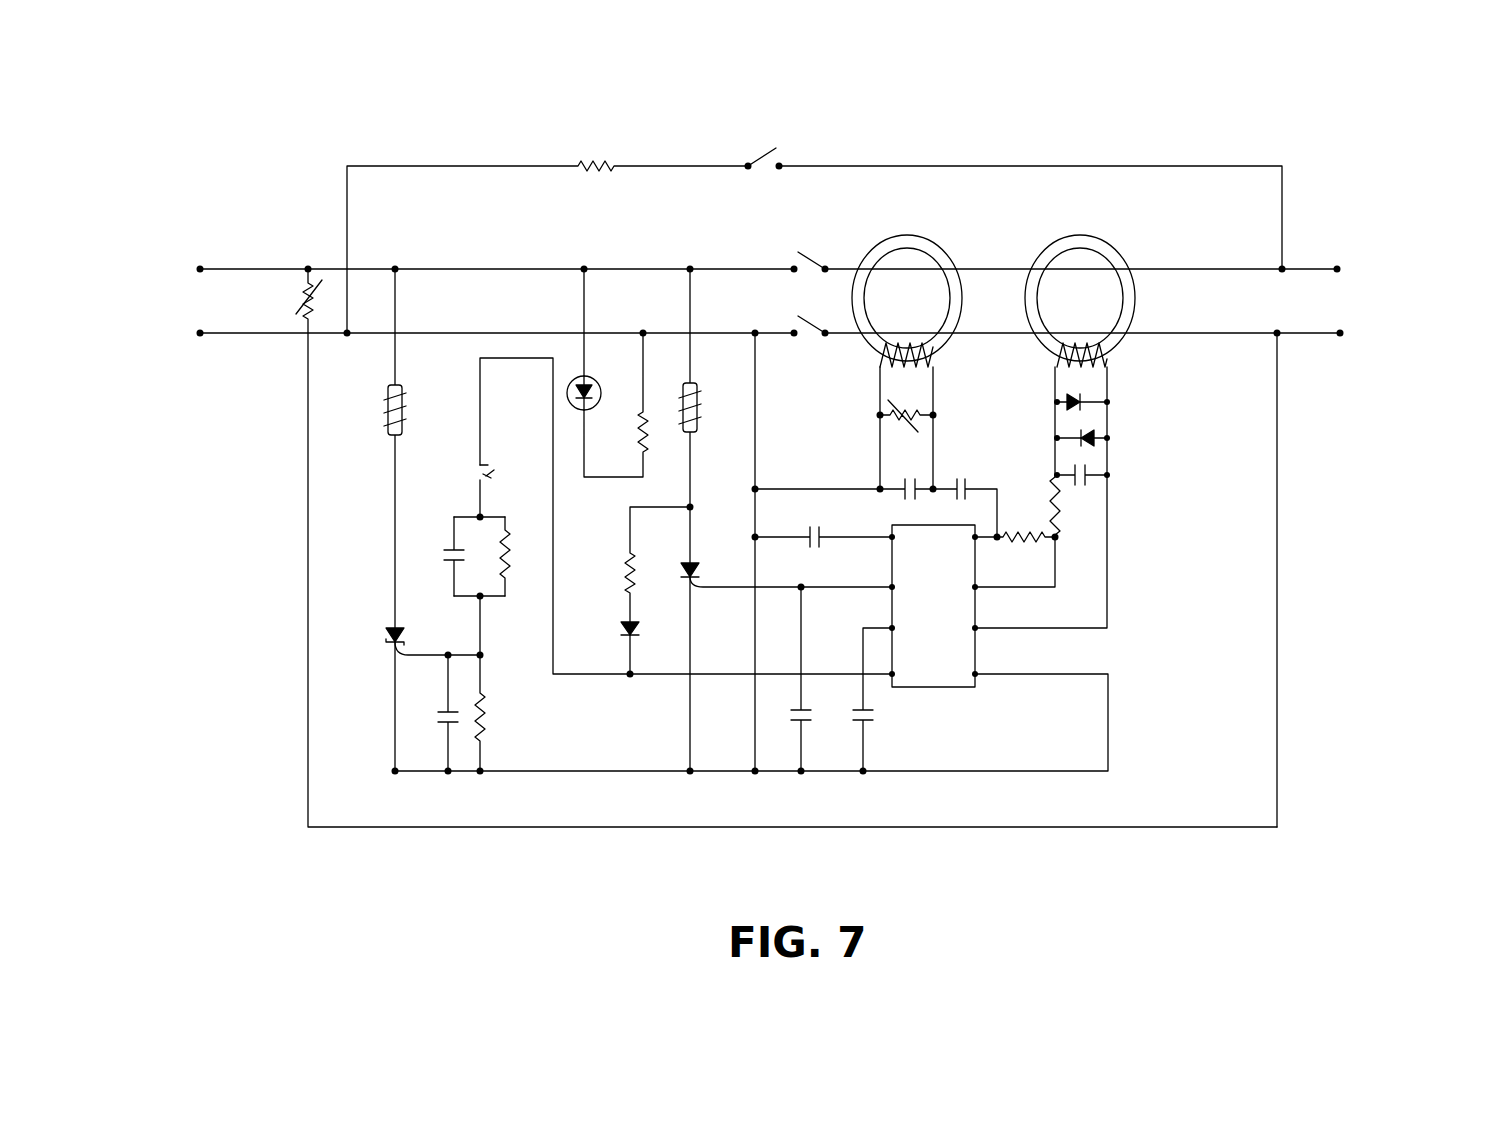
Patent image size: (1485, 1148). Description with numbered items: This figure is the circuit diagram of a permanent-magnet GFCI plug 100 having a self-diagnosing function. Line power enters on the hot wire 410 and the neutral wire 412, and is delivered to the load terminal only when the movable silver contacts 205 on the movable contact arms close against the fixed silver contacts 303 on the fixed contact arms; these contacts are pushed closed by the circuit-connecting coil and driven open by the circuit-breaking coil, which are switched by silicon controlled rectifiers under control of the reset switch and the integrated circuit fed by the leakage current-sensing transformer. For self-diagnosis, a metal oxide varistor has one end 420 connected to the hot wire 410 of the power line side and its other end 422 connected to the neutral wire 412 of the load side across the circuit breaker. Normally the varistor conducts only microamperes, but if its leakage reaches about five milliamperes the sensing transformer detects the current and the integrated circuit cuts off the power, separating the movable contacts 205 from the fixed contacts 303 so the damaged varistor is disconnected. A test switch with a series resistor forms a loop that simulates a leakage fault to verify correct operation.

The permanent-magnet GFCI plug 100 is at (955, 72).
The hot wire of the power line side 410 is at (237, 269).
The neutral wire of the load side 412 is at (237, 333).
The one end of the metal oxide varistor MOV1 420 is at (308, 268).
The other end of the metal oxide varistor MOV1 422 is at (1277, 334).
The fixed silver contacts 303 is at (794, 310).
The movable silver contacts 205 is at (829, 317).